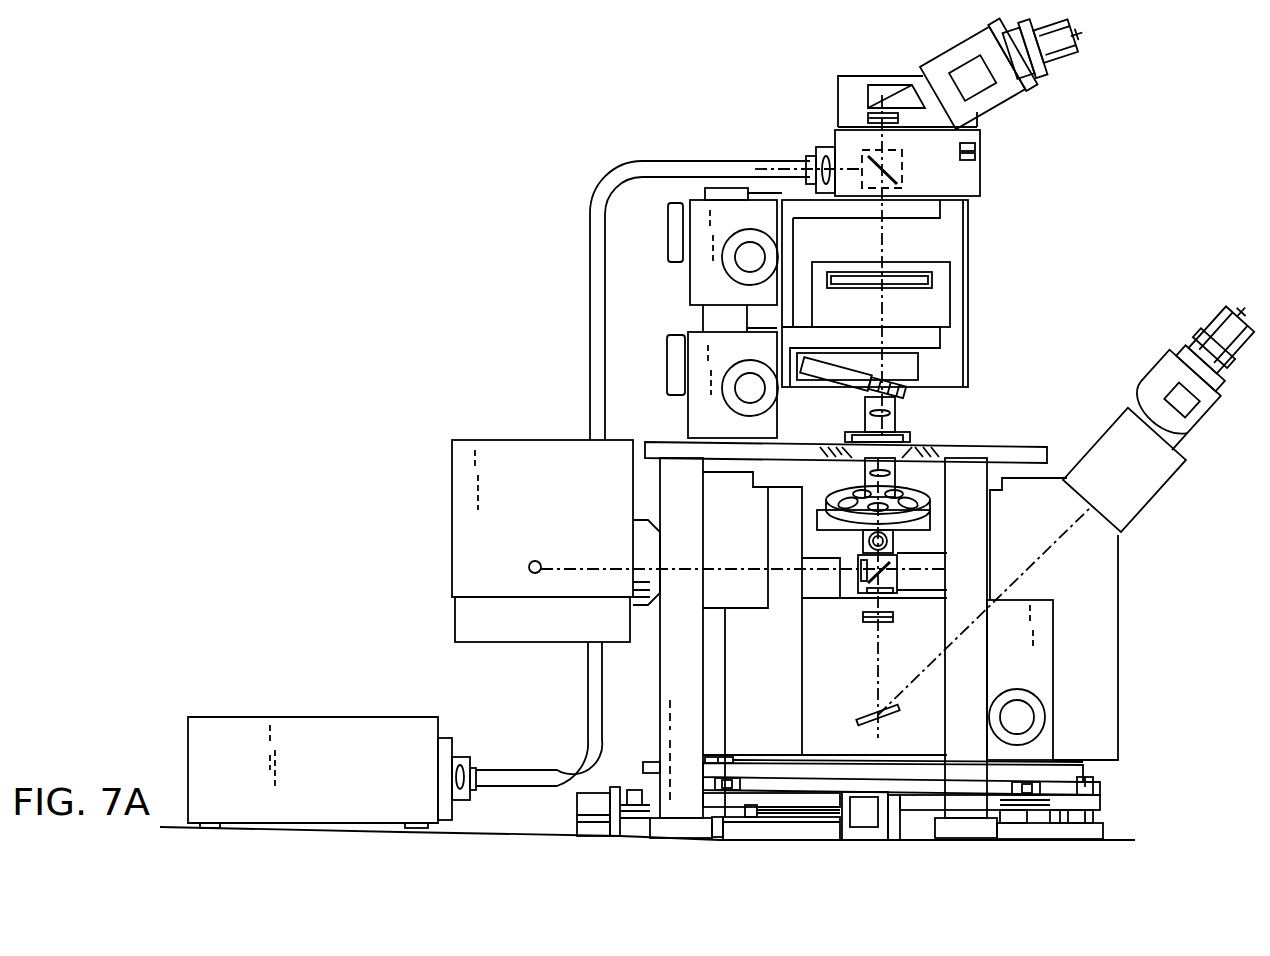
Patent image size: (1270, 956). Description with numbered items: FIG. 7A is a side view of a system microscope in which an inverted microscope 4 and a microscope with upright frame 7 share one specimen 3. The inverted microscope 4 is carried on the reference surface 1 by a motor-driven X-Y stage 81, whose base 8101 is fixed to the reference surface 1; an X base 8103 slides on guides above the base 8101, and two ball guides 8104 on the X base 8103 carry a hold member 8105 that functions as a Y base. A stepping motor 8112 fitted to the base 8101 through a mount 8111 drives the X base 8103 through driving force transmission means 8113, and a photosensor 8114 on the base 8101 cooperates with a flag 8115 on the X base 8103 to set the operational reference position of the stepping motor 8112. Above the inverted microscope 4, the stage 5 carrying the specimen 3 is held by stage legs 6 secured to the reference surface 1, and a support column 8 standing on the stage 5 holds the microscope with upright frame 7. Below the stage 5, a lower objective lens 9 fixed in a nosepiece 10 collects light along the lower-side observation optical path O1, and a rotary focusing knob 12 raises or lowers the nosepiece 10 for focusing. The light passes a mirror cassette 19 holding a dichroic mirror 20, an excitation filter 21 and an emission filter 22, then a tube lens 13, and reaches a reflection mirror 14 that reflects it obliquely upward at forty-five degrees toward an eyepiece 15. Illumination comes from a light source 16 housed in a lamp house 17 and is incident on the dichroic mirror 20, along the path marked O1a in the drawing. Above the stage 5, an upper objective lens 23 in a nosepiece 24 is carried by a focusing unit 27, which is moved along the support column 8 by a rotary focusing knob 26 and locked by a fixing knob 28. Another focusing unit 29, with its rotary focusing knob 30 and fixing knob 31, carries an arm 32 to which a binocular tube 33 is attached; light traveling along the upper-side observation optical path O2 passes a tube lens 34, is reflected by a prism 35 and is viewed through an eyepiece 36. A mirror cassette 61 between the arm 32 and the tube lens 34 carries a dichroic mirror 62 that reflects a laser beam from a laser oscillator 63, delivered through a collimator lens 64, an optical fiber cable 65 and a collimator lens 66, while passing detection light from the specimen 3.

The reference surface 1 is at (492, 837).
The specimen 3 is at (912, 441).
The inverted microscope 4 is at (1137, 622).
The stage 5 is at (1030, 445).
The stage legs 6 is at (665, 692).
The microscope with upright frame 7 is at (852, 222).
The support column 8 is at (648, 607).
The lower objective lens 9 is at (890, 492).
The nosepiece 10 is at (840, 498).
The rotary focusing knob 12 is at (1018, 708).
The tube lens 13 is at (862, 618).
The reflection mirror 14 is at (860, 722).
The eyepiece 15 is at (1235, 345).
The light source 16 is at (530, 563).
The lamp house 17 is at (490, 442).
The mirror cassette 19 is at (925, 570).
The dichroic mirror 20 is at (898, 580).
The excitation filter 21 is at (858, 563).
The emission filter 22 is at (891, 596).
The upper objective lens 23 is at (896, 418).
The nosepiece 24 is at (815, 378).
The rotary focusing knob 26 is at (745, 390).
The focusing unit 27 is at (702, 345).
The fixing knob 28 is at (668, 363).
The focusing unit 29 is at (698, 272).
The rotary focusing knob 30 is at (745, 258).
The fixing knob 31 is at (668, 227).
The arm 32 is at (942, 210).
The binocular tube 33 is at (914, 78).
The tube lens 34 is at (865, 118).
The prism 35 is at (880, 93).
The eyepiece 36 is at (1072, 56).
The mirror cassette 61 is at (925, 162).
The dichroic mirror 62 is at (900, 178).
The laser oscillator 63 is at (325, 735).
The collimator lens 64 is at (460, 758).
The optical fiber cable 65 is at (588, 360).
The collimator lens 66 is at (826, 150).
The motor-driven X-Y stage 81 is at (857, 798).
The base 8101 is at (815, 840).
The X base 8103 is at (918, 810).
The ball guides 8104 is at (722, 792).
The hold member 8105 is at (783, 770).
The mount 8111 is at (614, 830).
The stepping motor 8112 is at (585, 815).
The driving force transmission means 8113 is at (632, 790).
The photosensor 8114 is at (1095, 798).
The flag 8115 is at (1070, 826).
The lower-side observation optical path O1 is at (870, 698).
The upper-side observation optical path O2 is at (886, 243).
The optical axis O1a is at (582, 566).